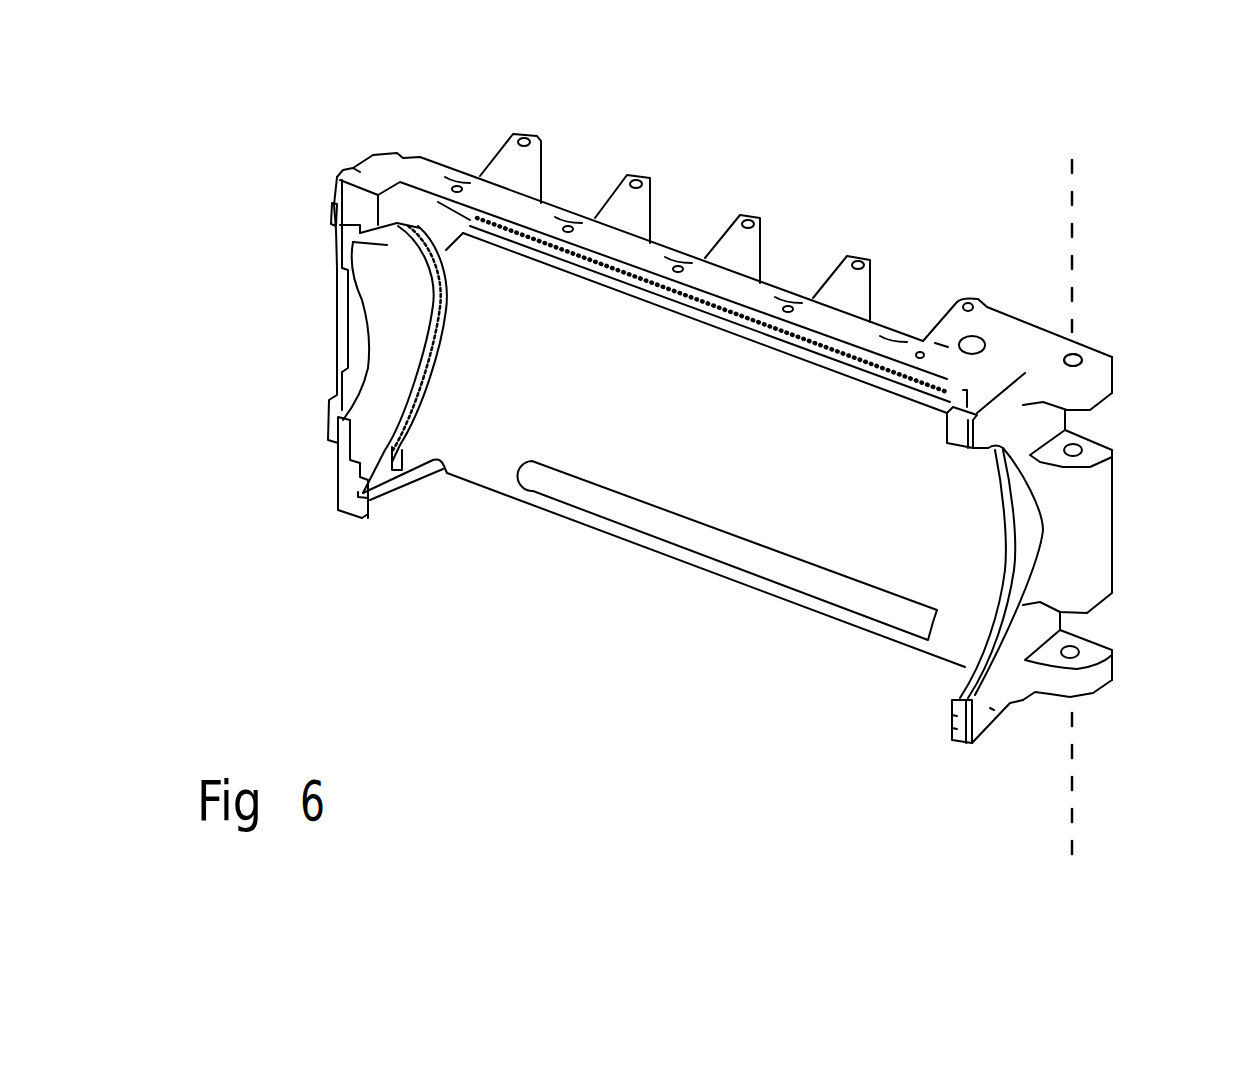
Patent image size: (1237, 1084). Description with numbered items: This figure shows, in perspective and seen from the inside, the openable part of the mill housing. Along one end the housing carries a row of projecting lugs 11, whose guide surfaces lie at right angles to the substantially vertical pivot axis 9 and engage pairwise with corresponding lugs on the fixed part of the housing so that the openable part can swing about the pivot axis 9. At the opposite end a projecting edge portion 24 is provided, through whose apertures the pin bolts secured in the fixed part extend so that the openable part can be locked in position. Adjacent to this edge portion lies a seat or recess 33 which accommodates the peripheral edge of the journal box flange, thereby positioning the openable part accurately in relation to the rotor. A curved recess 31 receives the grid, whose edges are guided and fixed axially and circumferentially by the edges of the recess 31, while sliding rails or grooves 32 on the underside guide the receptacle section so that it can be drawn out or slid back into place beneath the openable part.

The projecting edge portion 24 is at (344, 172).
The seat or recess 33 is at (400, 415).
The recess 31 is at (423, 380).
The sliding rails or grooves 32 is at (383, 496).
The pivot axis 9 is at (1072, 195).
The projecting lugs 11 is at (1098, 378).